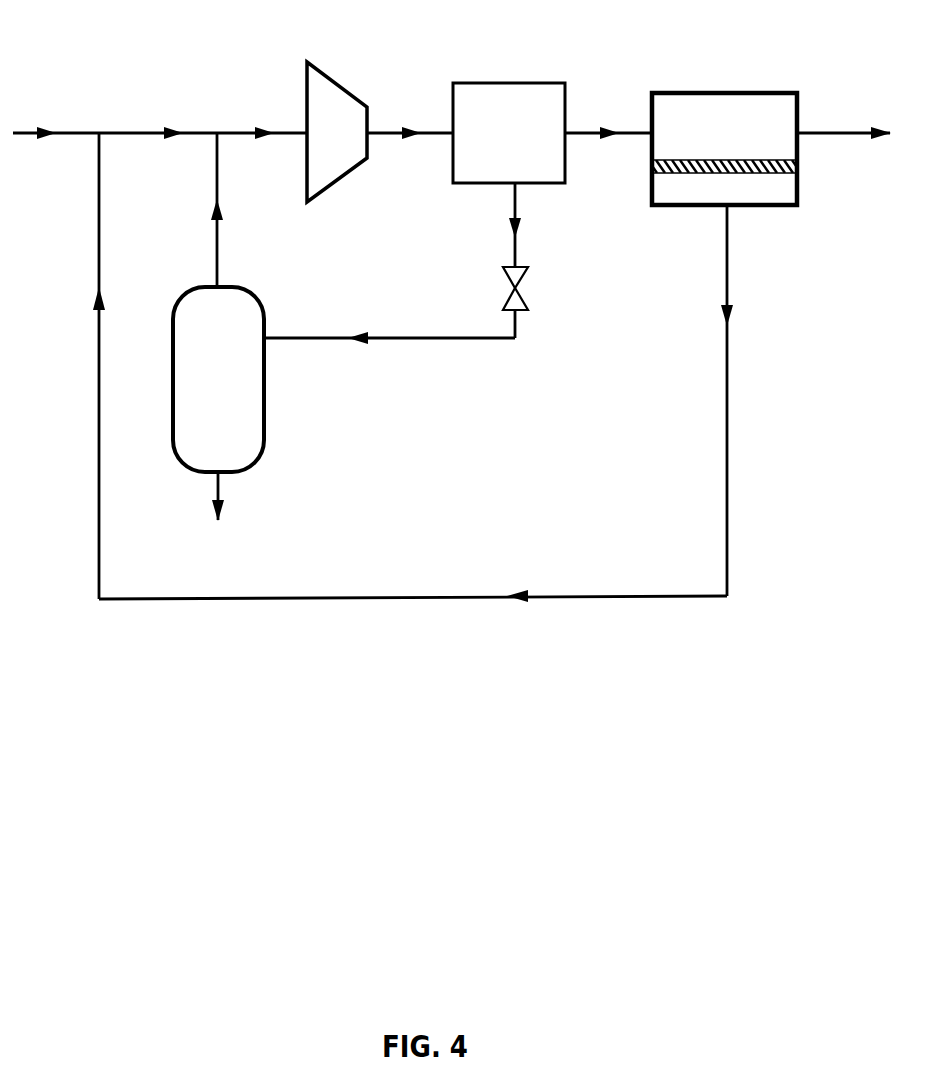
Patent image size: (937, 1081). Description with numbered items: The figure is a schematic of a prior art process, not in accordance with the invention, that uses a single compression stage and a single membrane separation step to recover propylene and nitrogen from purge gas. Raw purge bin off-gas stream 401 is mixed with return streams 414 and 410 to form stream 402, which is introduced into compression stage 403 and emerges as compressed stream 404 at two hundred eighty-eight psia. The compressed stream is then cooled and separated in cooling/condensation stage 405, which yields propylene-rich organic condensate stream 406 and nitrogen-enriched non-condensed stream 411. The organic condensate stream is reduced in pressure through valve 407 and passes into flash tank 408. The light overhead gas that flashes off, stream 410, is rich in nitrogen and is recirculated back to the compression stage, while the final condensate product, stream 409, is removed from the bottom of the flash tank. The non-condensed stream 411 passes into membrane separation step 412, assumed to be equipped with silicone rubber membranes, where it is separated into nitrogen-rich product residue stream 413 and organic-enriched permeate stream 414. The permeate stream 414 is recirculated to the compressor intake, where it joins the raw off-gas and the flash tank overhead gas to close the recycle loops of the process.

The raw purge bin off-gas stream 401 is at (115, 118).
The mixed feed stream 402 is at (262, 150).
The compression stage 403 is at (322, 69).
The compressed stream 404 is at (410, 150).
The cooling/condensation stage 405 is at (532, 83).
The propylene-rich organic condensate stream 406 is at (541, 225).
The valve 407 is at (527, 301).
The flash tank 408 is at (264, 403).
The final condensate product stream 409 is at (217, 515).
The light overhead gas stream 410 is at (186, 210).
The nitrogen-enriched non-condensed stream 411 is at (608, 149).
The membrane separation step 412 is at (742, 93).
The nitrogen-rich product residue stream 413 is at (848, 150).
The organic-enriched permeate stream 414 is at (443, 367).